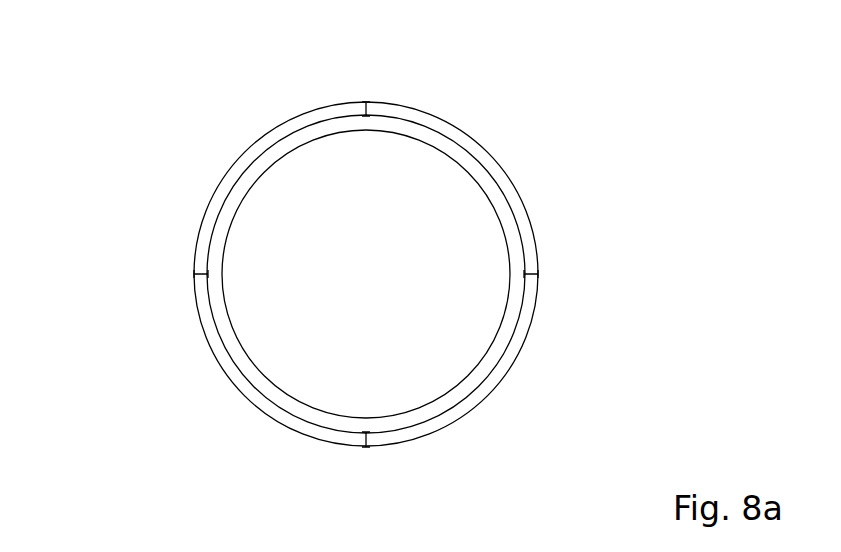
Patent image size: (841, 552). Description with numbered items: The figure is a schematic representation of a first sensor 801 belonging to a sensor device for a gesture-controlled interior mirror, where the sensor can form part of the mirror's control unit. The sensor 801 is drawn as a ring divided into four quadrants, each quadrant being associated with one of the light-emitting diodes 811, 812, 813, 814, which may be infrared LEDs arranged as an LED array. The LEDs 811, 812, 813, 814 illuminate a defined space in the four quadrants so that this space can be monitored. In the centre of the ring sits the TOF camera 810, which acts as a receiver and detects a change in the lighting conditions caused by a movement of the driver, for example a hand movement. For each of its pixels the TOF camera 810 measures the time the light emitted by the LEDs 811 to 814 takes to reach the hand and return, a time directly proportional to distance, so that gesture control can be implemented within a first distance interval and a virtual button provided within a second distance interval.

The first sensor 801 is at (110, 78).
The TOF camera 810 is at (370, 270).
The light-emitting diode 811 is at (514, 124).
The light-emitting diode 812 is at (211, 126).
The light-emitting diode 813 is at (198, 410).
The light-emitting diode 814 is at (527, 423).